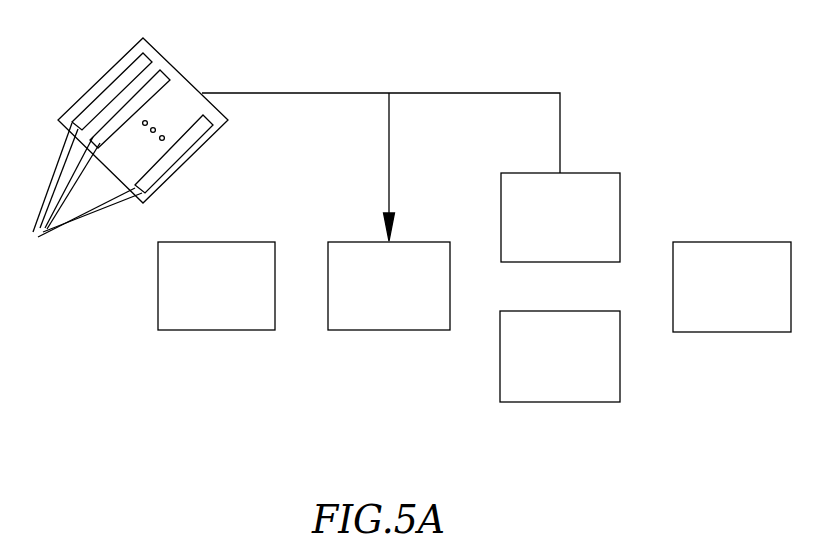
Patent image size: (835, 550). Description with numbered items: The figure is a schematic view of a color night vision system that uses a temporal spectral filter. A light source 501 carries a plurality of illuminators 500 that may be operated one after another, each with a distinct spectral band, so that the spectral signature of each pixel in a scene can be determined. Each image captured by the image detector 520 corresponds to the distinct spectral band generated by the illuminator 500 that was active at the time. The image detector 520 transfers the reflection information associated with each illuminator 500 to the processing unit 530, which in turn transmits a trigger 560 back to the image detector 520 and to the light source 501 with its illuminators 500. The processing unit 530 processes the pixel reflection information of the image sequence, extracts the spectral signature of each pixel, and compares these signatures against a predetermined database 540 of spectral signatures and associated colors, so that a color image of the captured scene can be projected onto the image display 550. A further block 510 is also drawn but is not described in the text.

The illuminator 500 is at (172, 100).
The light source 501 is at (187, 163).
The processor 510 is at (190, 332).
The image detector 520 is at (360, 332).
The processing unit 530 is at (583, 168).
The predetermined database 540 is at (532, 403).
The image display 550 is at (703, 242).
The trigger 560 is at (470, 92).